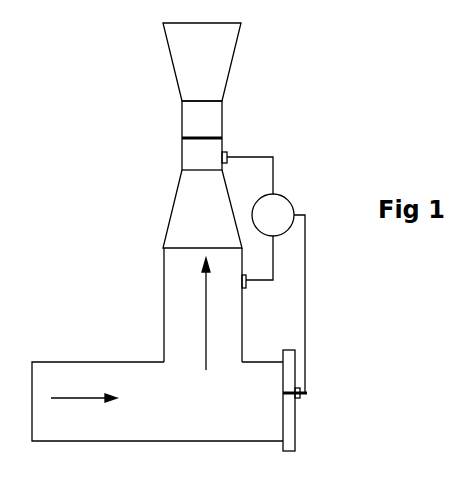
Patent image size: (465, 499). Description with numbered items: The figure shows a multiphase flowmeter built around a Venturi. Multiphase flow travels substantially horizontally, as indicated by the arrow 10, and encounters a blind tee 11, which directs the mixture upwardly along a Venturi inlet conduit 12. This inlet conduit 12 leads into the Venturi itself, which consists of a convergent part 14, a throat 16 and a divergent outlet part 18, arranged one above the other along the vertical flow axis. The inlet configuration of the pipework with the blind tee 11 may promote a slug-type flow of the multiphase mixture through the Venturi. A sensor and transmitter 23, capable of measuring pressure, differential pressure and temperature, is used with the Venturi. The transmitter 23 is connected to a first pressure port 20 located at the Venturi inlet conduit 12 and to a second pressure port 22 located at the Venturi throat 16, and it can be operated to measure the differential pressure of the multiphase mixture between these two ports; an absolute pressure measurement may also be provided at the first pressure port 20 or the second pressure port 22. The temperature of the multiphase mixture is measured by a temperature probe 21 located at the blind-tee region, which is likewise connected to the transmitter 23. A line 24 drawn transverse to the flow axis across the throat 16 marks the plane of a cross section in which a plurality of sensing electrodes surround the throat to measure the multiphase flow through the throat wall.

The arrow 10 is at (61, 395).
The blind tee 11 is at (211, 407).
The Venturi inlet conduit 12 is at (206, 287).
The convergent part 14 is at (172, 214).
The throat 16 is at (188, 116).
The divergent outlet part 18 is at (172, 53).
The first pressure port 20 is at (247, 281).
The temperature probe 21 is at (300, 396).
The second pressure port 22 is at (226, 152).
The sensor and transmitter 23 is at (287, 198).
The line 24 is at (190, 143).